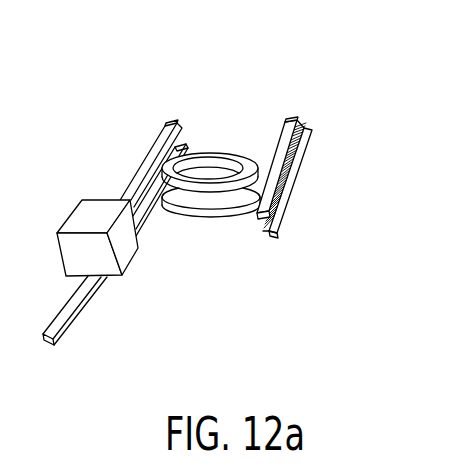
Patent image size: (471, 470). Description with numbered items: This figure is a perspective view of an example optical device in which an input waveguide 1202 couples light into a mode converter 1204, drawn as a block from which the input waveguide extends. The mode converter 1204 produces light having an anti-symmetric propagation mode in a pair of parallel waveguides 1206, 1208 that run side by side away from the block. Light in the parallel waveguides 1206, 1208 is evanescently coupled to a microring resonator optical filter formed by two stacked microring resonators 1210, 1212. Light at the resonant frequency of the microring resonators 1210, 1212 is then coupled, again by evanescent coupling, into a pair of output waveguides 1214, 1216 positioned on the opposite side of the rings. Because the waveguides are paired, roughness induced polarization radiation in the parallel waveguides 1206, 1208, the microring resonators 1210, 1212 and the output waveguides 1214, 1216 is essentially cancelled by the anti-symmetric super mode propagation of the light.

The input waveguide 1202 is at (68, 313).
The mode converter 1204 is at (138, 249).
The parallel waveguide 1206 is at (164, 124).
The parallel waveguide 1208 is at (188, 146).
The microring resonator 1210 is at (247, 160).
The microring resonator 1212 is at (237, 212).
The output waveguide 1214 is at (303, 121).
The output waveguide 1216 is at (278, 230).